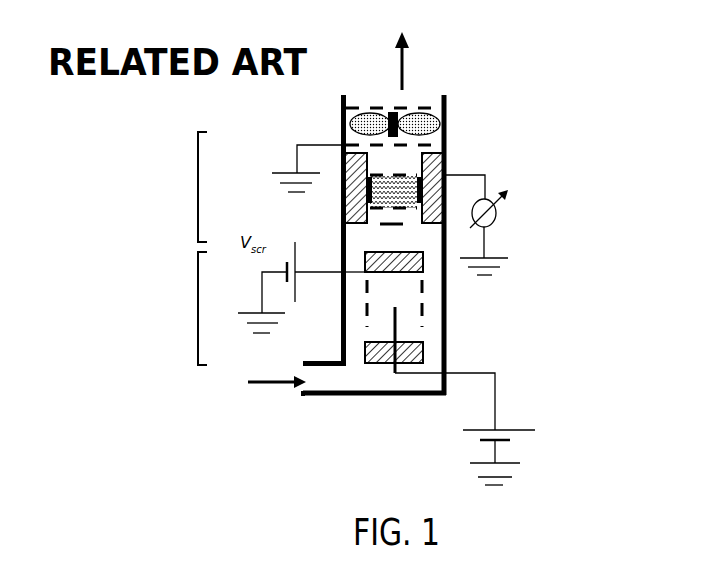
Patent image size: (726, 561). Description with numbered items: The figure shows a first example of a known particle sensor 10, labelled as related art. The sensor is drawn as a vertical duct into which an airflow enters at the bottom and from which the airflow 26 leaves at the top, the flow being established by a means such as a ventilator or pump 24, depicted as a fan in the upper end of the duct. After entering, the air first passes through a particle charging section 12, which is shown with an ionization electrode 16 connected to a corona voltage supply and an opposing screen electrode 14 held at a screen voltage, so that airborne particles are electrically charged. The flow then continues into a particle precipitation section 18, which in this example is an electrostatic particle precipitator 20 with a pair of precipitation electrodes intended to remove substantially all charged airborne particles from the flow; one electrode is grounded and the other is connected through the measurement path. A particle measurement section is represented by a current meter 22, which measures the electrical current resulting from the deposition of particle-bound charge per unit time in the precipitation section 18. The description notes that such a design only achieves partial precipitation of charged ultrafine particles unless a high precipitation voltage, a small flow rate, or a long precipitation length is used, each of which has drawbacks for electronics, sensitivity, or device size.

The corona discharge ion sensor housing 10 is at (308, 397).
The corona discharge section 12 is at (198, 308).
The screen electrode 14 is at (423, 267).
The corona electrode 16 is at (425, 322).
The ion trap section 18 is at (198, 187).
The ion trap electrode 20 is at (452, 172).
The current sensor 22 is at (497, 217).
The fan 24 is at (420, 128).
The outlet flow 26 is at (436, 82).